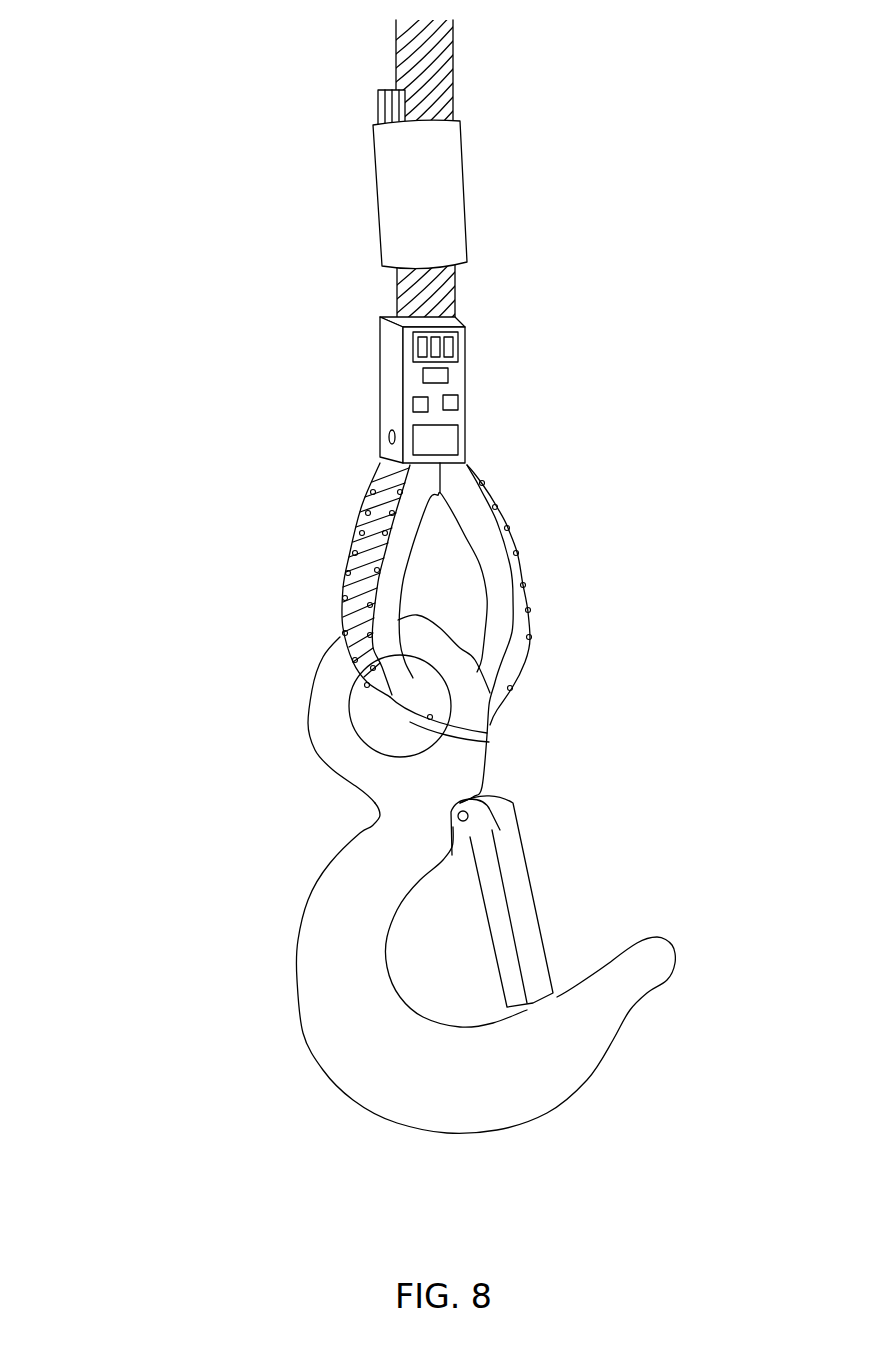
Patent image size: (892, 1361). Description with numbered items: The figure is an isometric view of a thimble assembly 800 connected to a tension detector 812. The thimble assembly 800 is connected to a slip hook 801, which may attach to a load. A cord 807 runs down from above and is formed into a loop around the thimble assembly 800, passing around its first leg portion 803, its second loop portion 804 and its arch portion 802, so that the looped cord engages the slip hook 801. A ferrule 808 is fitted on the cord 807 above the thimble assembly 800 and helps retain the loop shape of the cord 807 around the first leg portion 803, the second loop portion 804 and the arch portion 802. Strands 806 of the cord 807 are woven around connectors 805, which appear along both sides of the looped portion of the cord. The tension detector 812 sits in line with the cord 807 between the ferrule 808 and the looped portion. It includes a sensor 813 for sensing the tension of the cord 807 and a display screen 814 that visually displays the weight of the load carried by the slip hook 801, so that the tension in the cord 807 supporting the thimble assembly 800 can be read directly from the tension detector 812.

The thimble assembly 800 is at (321, 368).
The slip hook 801 is at (307, 915).
The arch portion 802 is at (545, 690).
The first leg portion 803 is at (430, 512).
The second loop portion 804 is at (597, 462).
The connectors 805 is at (345, 633).
The strands 806 is at (453, 42).
The cord 807 is at (258, 60).
The ferrule 808 is at (464, 170).
The tension detector 812 is at (466, 380).
The sensor 813 is at (388, 437).
The display screen 814 is at (462, 326).